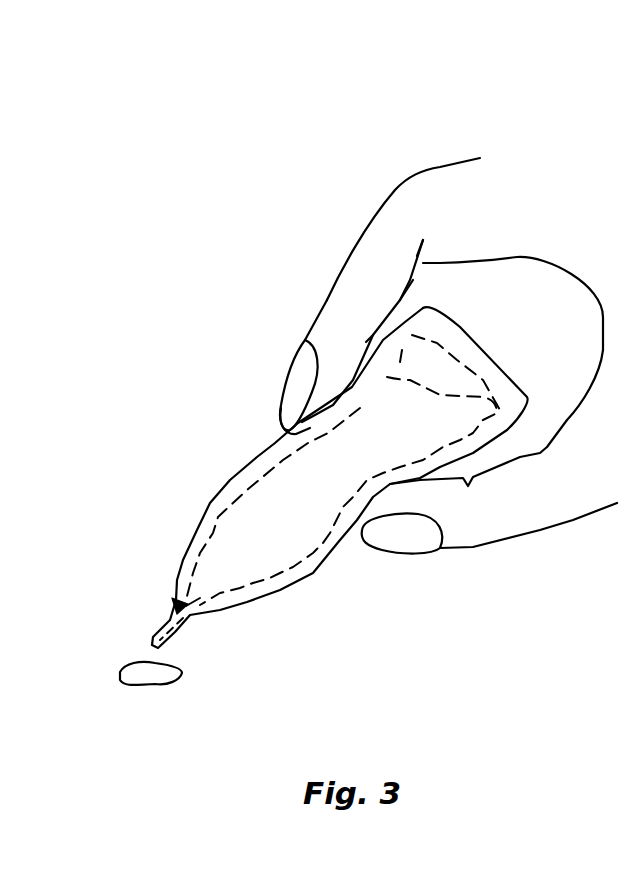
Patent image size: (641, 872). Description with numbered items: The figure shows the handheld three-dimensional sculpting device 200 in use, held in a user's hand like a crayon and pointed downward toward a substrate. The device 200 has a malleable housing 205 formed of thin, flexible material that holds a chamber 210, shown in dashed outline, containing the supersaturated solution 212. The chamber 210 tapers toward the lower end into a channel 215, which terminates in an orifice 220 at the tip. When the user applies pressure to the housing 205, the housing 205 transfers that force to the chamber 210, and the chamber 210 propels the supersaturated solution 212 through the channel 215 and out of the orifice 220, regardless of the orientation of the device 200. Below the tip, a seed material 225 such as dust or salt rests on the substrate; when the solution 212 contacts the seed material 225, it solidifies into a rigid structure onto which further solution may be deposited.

The handheld device 200 is at (188, 104).
The housing 205 is at (328, 563).
The chamber 210 is at (257, 502).
The supersaturated solution 212 is at (227, 562).
The channel 215 is at (197, 590).
The orifice 220 is at (170, 606).
The seed material 225 is at (137, 680).